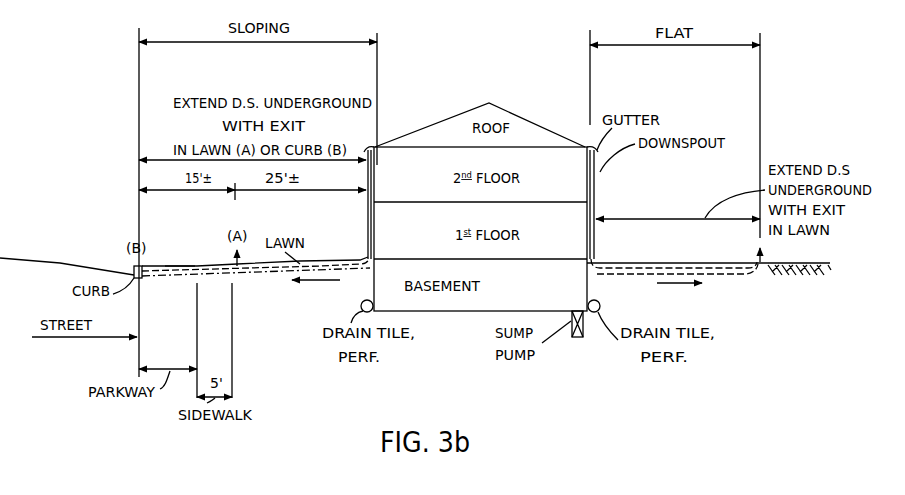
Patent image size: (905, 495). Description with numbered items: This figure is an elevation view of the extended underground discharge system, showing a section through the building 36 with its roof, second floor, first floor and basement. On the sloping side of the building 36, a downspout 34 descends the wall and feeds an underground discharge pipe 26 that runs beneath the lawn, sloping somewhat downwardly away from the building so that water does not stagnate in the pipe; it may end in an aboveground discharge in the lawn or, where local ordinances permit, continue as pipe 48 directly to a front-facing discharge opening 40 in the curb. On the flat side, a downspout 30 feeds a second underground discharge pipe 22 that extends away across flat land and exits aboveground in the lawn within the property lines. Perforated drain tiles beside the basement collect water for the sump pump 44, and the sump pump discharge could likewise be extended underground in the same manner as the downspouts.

The underground discharge pipe 22 is at (722, 275).
The underground discharge pipe 26 is at (322, 262).
The downspout 30 is at (597, 205).
The downspout 34 is at (367, 212).
The building 36 is at (438, 122).
The front-facing discharge opening 40 is at (126, 268).
The sump pump 44 is at (578, 310).
The discharge pipe 48 is at (170, 266).